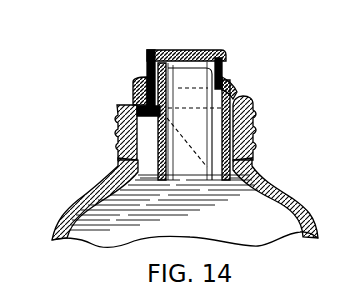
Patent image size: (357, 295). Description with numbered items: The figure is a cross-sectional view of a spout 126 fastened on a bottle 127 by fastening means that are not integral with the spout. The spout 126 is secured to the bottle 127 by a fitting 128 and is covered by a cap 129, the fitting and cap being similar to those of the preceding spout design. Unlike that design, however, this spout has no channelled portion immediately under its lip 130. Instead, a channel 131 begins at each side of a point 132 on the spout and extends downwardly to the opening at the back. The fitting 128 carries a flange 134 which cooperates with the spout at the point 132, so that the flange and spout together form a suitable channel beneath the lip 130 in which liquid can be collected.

The spout 126 is at (186, 102).
The bottle 127 is at (284, 219).
The fitting 128 is at (255, 120).
The cap 129 is at (226, 60).
The lip 130 is at (147, 53).
The channel 131 is at (210, 132).
The point 132 is at (117, 114).
The flange 134 is at (140, 80).